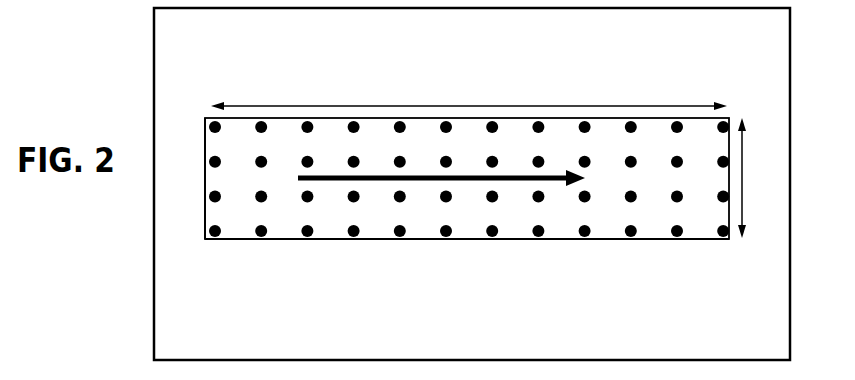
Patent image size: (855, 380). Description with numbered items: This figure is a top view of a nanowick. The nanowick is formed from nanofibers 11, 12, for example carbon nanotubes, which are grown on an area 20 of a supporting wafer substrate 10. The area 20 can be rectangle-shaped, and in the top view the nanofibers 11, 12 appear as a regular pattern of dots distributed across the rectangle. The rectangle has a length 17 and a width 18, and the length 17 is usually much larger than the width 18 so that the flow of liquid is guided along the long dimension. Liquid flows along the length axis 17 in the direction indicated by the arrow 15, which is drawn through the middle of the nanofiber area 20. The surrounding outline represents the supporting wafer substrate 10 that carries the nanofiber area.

The supporting wafer substrate 10 is at (472, 184).
The nanofibers 11 is at (205, 143).
The nanofibers 12 is at (306, 112).
The arrow 15 is at (494, 160).
The length 17 is at (469, 96).
The width 18 is at (754, 178).
The area 20 is at (455, 242).